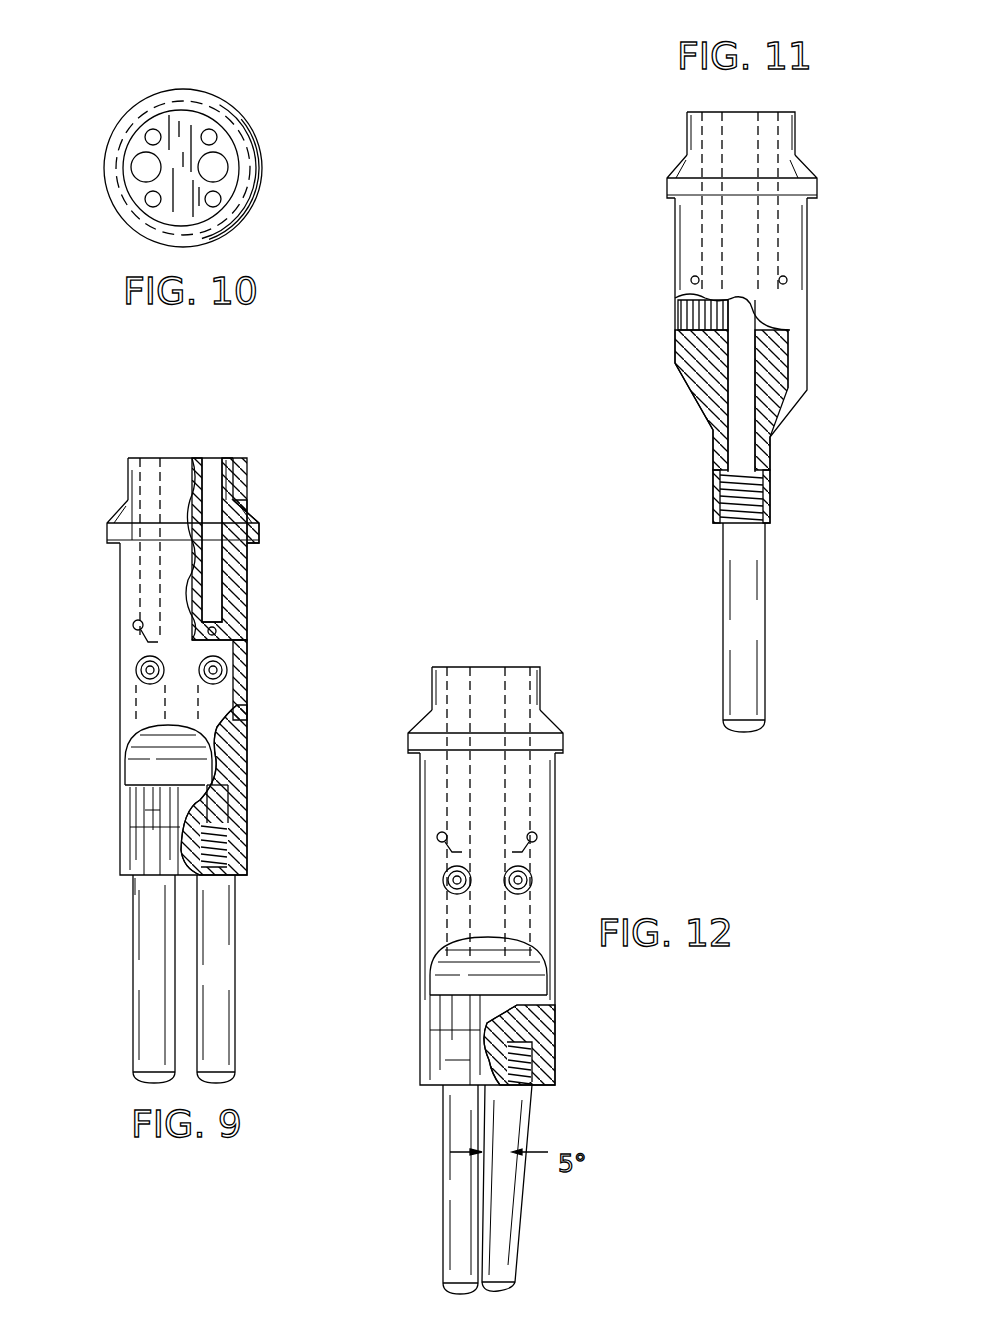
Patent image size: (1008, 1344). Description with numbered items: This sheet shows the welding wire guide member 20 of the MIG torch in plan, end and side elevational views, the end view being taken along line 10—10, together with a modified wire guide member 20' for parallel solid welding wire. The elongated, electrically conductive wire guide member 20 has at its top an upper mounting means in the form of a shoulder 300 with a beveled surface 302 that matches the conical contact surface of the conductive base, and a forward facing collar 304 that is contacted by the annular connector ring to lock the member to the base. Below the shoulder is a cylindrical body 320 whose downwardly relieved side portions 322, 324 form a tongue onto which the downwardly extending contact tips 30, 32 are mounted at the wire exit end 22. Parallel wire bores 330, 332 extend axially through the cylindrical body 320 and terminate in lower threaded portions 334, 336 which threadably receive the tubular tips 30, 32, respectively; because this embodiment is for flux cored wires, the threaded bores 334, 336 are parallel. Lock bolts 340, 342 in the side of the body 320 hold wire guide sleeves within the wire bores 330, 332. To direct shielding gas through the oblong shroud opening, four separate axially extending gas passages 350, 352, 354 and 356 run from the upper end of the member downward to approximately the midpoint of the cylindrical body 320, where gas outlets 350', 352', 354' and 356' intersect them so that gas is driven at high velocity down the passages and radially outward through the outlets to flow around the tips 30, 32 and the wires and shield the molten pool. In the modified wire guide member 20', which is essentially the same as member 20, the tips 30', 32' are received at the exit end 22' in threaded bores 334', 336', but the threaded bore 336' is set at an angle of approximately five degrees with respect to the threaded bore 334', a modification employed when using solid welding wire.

In FIG. 9, the welding wire guide member 20 is at (301, 652).
In FIG. 10, the welding wire guide member 20 is at (250, 154).
In FIG. 11, the welding wire guide member 20 is at (751, 380).
In FIG. 12, the wire guide member 20' is at (534, 876).
In FIG. 9, the wire exit end 22 is at (246, 920).
In FIG. 11, the wire exit end 22 is at (821, 510).
In FIG. 12, the wire exit end 22' is at (565, 1045).
In FIG. 9, the tubular tip 30 is at (120, 979).
In FIG. 12, the tubular tip 30' is at (414, 1189).
In FIG. 9, the tubular tip 32 is at (255, 979).
In FIG. 11, the tubular tip 32 is at (789, 627).
In FIG. 12, the tubular tip 32' is at (549, 1188).
In FIG. 9, the shoulder 300 is at (256, 533).
In FIG. 10, the shoulder 300 is at (262, 174).
In FIG. 11, the shoulder 300 is at (805, 168).
In FIG. 9, the beveled surface 302 is at (246, 503).
In FIG. 10, the beveled surface 302 is at (212, 240).
In FIG. 11, the beveled surface 302 is at (675, 168).
In FIG. 9, the forward facing collar 304 is at (254, 544).
In FIG. 11, the forward facing collar 304 is at (673, 205).
In FIG. 9, the cylindrical body 320 is at (243, 731).
In FIG. 11, the relieved side portion 322 is at (792, 391).
In FIG. 9, the relieved side portion 324 is at (150, 770).
In FIG. 11, the relieved side portion 324 is at (690, 383).
In FIG. 9, the wire bore 330 is at (140, 806).
In FIG. 10, the wire bore 330 is at (141, 162).
In FIG. 9, the wire bore 332 is at (215, 800).
In FIG. 10, the wire bore 332 is at (219, 162).
In FIG. 11, the wire bore 332 is at (738, 395).
In FIG. 9, the threaded portion 334 is at (98, 920).
In FIG. 12, the threaded bore 334' is at (397, 1123).
In FIG. 9, the threaded portion 336 is at (272, 865).
In FIG. 11, the threaded portion 336 is at (697, 520).
In FIG. 12, the threaded bore 336' is at (584, 1082).
In FIG. 9, the lock bolt 340 is at (226, 673).
In FIG. 11, the lock bolt 340 is at (684, 323).
In FIG. 9, the lock bolt 342 is at (140, 674).
In FIG. 10, the gas passage 350 is at (149, 80).
In FIG. 10, the gas outlet 350' is at (98, 95).
In FIG. 10, the gas passage 352 is at (240, 91).
In FIG. 11, the gas passage 352 is at (829, 202).
In FIG. 10, the gas outlet 352' is at (266, 103).
In FIG. 11, the gas outlet 352' is at (838, 256).
In FIG. 9, the gas passage 354 is at (220, 503).
In FIG. 10, the gas passage 354 is at (286, 202).
In FIG. 11, the gas passage 354 is at (637, 202).
In FIG. 9, the gas outlet 354' is at (297, 613).
In FIG. 10, the gas outlet 354' is at (301, 228).
In FIG. 11, the gas outlet 354' is at (634, 277).
In FIG. 9, the gas passage 356 is at (139, 509).
In FIG. 10, the gas passage 356 is at (112, 232).
In FIG. 9, the gas outlet 356' is at (102, 605).
In FIG. 10, the gas outlet 356' is at (102, 218).
In FIG. 9, the welding wire 10 is at (278, 428).